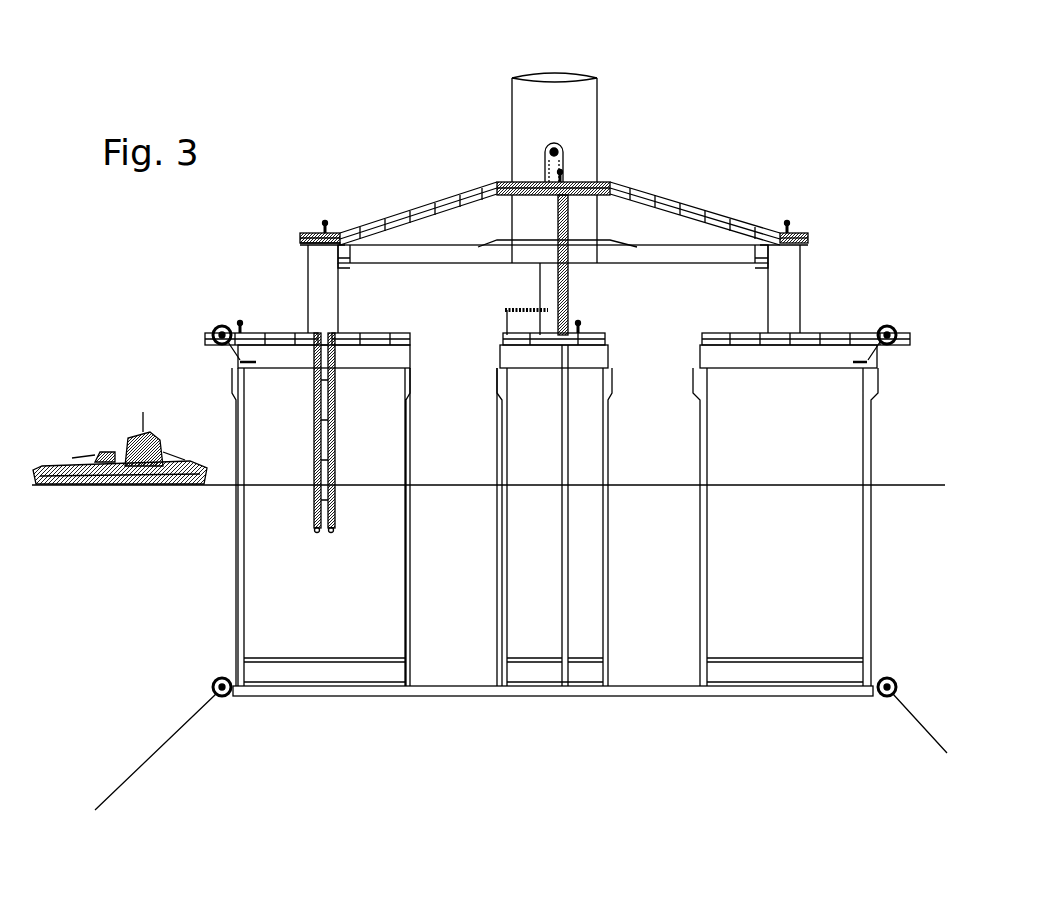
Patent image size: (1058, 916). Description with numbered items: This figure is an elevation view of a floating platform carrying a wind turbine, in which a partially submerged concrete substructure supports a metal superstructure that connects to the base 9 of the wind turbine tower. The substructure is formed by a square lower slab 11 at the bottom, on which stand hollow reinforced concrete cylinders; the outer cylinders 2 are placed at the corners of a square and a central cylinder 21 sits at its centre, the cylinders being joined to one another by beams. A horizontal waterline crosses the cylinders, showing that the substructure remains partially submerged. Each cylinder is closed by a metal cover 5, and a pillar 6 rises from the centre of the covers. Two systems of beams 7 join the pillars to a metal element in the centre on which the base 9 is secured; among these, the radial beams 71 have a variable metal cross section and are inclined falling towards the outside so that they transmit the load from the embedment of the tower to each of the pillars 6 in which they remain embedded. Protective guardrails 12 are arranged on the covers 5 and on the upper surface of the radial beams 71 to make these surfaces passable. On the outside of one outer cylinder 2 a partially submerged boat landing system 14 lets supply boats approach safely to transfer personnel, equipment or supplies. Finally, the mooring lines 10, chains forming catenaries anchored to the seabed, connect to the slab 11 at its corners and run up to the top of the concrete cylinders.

The hollow reinforced concrete cylinder 2 is at (242, 610).
The metal cover 5 is at (278, 353).
The pillar 6 is at (792, 292).
The system of beams 7 is at (403, 252).
The base of the wind turbine tower 9 is at (594, 126).
The mooring line 10 is at (172, 728).
The lower slab 11 is at (355, 688).
The protective guardrail 12 is at (418, 208).
The boat landing system 14 is at (312, 507).
The central hollow reinforced concrete cylinder 21 is at (500, 634).
The radial beam 71 is at (653, 230).